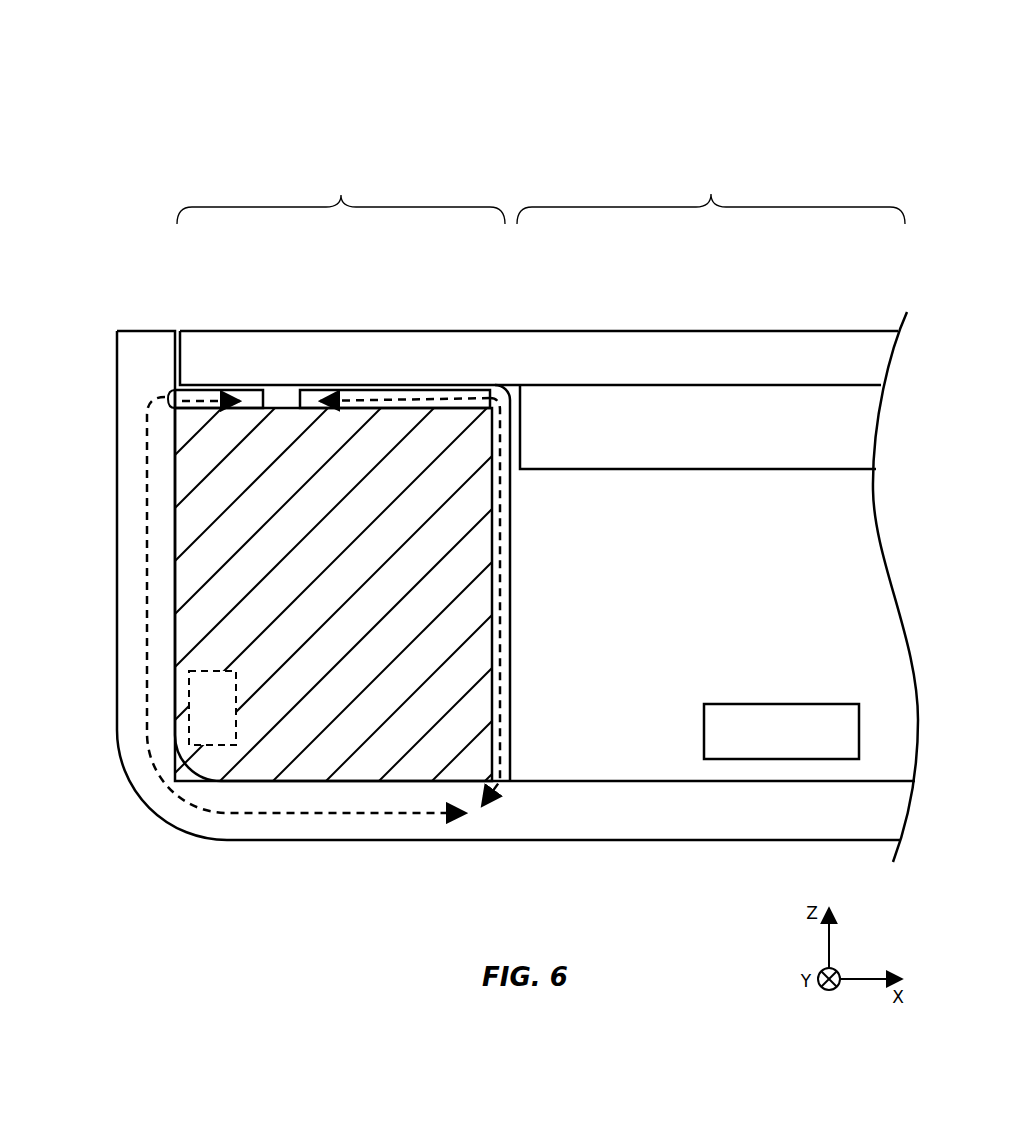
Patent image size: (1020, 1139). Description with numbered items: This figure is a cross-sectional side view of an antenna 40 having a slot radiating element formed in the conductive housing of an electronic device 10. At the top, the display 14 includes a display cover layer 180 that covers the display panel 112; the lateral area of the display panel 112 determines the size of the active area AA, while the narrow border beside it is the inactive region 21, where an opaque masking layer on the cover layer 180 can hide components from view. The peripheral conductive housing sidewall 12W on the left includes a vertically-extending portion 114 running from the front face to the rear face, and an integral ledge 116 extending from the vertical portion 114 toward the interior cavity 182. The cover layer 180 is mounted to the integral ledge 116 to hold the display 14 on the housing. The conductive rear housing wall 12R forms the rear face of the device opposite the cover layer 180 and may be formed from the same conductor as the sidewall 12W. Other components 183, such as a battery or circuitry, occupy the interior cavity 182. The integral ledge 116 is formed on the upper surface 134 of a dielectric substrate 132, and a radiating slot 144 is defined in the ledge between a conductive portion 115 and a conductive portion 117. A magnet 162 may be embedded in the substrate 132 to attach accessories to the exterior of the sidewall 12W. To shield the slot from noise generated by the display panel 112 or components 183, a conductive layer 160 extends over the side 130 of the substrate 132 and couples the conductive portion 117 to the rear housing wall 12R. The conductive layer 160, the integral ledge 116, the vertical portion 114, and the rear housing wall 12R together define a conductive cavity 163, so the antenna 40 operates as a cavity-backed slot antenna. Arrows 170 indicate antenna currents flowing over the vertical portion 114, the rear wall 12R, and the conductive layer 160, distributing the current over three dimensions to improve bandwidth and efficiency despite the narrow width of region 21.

The electronic device 10 is at (750, 96).
The inactive region 21 is at (341, 198).
The active area AA is at (711, 198).
The display 14 is at (737, 274).
The antenna 40 is at (454, 308).
The display panel 112 is at (858, 430).
The display cover layer 180 is at (641, 357).
The vertically-extending portion 114 is at (128, 430).
The conductive rear housing wall 12R is at (704, 824).
The peripheral conductive housing sidewall 12W is at (90, 656).
The dielectric substrate 132 is at (473, 510).
The conductive layer 160 is at (497, 706).
The side of substrate 130 is at (498, 636).
The conductive portion 115 is at (213, 390).
The conductive portion 117 is at (316, 390).
The upper surface 134 is at (404, 405).
The integral ledge 116 is at (172, 397).
The radiating slot 144 is at (282, 420).
The conductive cavity 163 is at (340, 683).
The magnet 162 is at (216, 746).
The antenna currents 170 is at (490, 396).
The interior cavity 182 is at (706, 603).
The components 183 is at (773, 716).